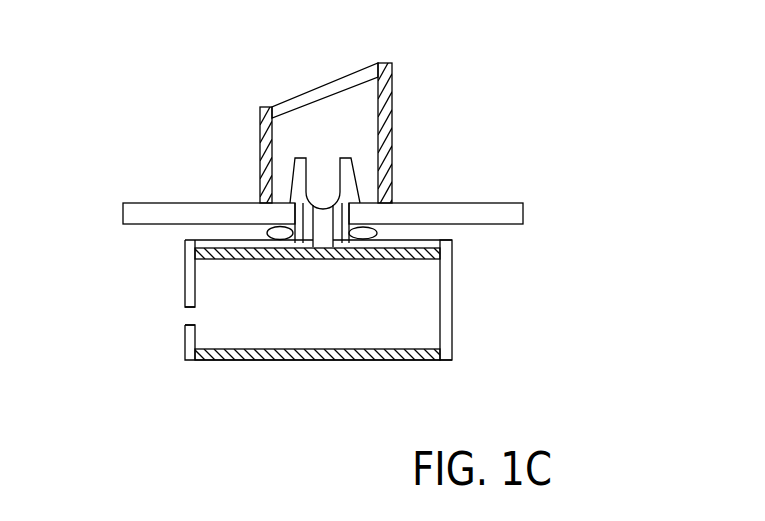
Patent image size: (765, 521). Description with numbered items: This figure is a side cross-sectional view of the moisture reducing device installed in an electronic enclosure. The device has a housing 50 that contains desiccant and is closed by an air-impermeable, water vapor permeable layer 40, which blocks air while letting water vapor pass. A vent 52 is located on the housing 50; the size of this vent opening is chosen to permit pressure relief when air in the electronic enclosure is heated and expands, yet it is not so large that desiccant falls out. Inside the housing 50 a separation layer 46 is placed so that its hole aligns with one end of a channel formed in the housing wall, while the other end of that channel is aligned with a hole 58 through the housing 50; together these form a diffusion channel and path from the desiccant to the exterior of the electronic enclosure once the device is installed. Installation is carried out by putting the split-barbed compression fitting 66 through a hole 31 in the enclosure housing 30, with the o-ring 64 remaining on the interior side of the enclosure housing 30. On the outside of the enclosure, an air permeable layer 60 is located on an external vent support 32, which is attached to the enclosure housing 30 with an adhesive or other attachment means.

The enclosure housing 30 is at (190, 200).
The hole 31 is at (356, 213).
The external vent support 32 is at (365, 113).
The air-impermeable, water vapor permeable layer 40 is at (296, 346).
The separation layer 46 is at (258, 259).
The housing 50 is at (455, 300).
The vent 52 is at (176, 318).
The hole 58 is at (337, 245).
The air permeable layer 60 is at (330, 79).
The o-ring 64 is at (385, 234).
The split-barbed compression fitting 66 is at (358, 178).